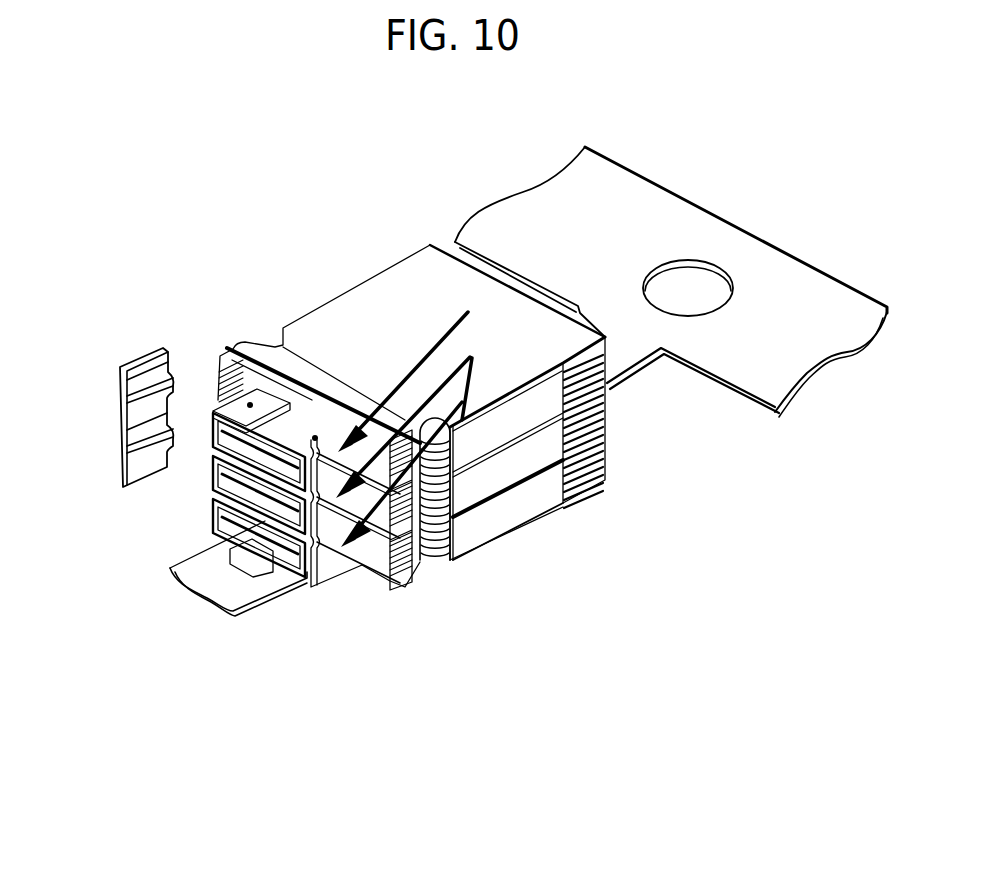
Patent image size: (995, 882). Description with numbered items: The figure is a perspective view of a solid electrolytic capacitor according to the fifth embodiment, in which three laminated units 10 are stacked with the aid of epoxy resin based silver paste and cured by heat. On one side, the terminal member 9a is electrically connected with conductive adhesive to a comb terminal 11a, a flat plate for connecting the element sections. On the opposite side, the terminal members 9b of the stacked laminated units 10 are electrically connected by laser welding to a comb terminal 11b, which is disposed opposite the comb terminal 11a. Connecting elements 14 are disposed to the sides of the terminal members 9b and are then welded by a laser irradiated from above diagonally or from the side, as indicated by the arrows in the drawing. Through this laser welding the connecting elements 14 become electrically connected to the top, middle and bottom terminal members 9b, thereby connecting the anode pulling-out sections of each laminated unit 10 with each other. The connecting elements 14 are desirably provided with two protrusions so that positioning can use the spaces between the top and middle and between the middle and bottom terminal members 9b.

The laminated unit 10 is at (377, 290).
The terminal member 9a is at (513, 520).
The terminal member 9b is at (213, 527).
The comb terminal 11a is at (825, 287).
The comb terminal 11b is at (258, 588).
The connecting element 14 is at (315, 440).